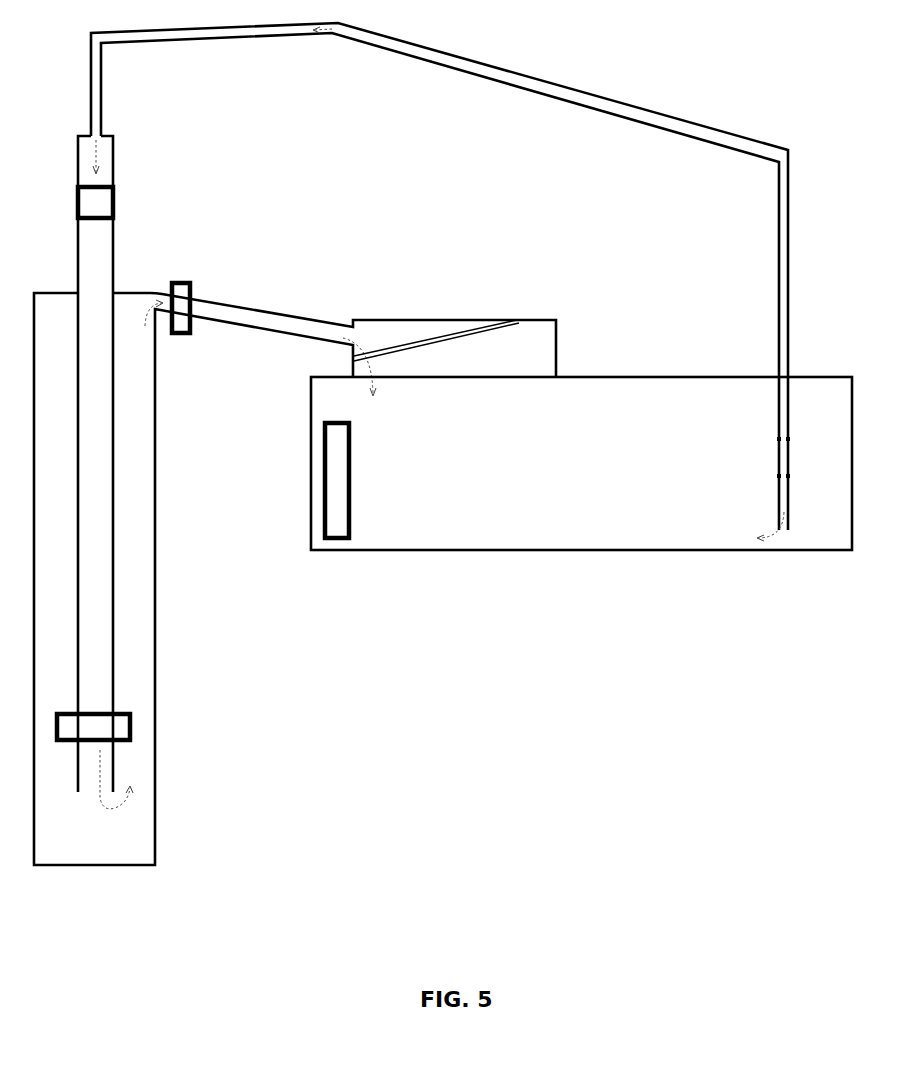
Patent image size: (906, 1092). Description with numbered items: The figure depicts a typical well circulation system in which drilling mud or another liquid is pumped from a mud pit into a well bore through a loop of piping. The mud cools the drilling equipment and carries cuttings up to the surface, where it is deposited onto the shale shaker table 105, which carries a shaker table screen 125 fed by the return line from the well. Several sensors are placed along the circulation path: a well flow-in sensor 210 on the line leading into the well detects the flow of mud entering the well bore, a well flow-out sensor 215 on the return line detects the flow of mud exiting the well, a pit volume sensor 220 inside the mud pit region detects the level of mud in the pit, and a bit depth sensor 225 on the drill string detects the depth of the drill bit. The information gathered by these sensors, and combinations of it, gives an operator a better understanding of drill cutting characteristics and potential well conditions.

The shale shaker table 105 is at (581, 448).
The shaker table screen 125 is at (406, 332).
The well flow-in sensor 210 is at (118, 203).
The well flow-out sensor 215 is at (182, 281).
The pit volume sensor 220 is at (355, 509).
The bit depth sensor 225 is at (133, 722).